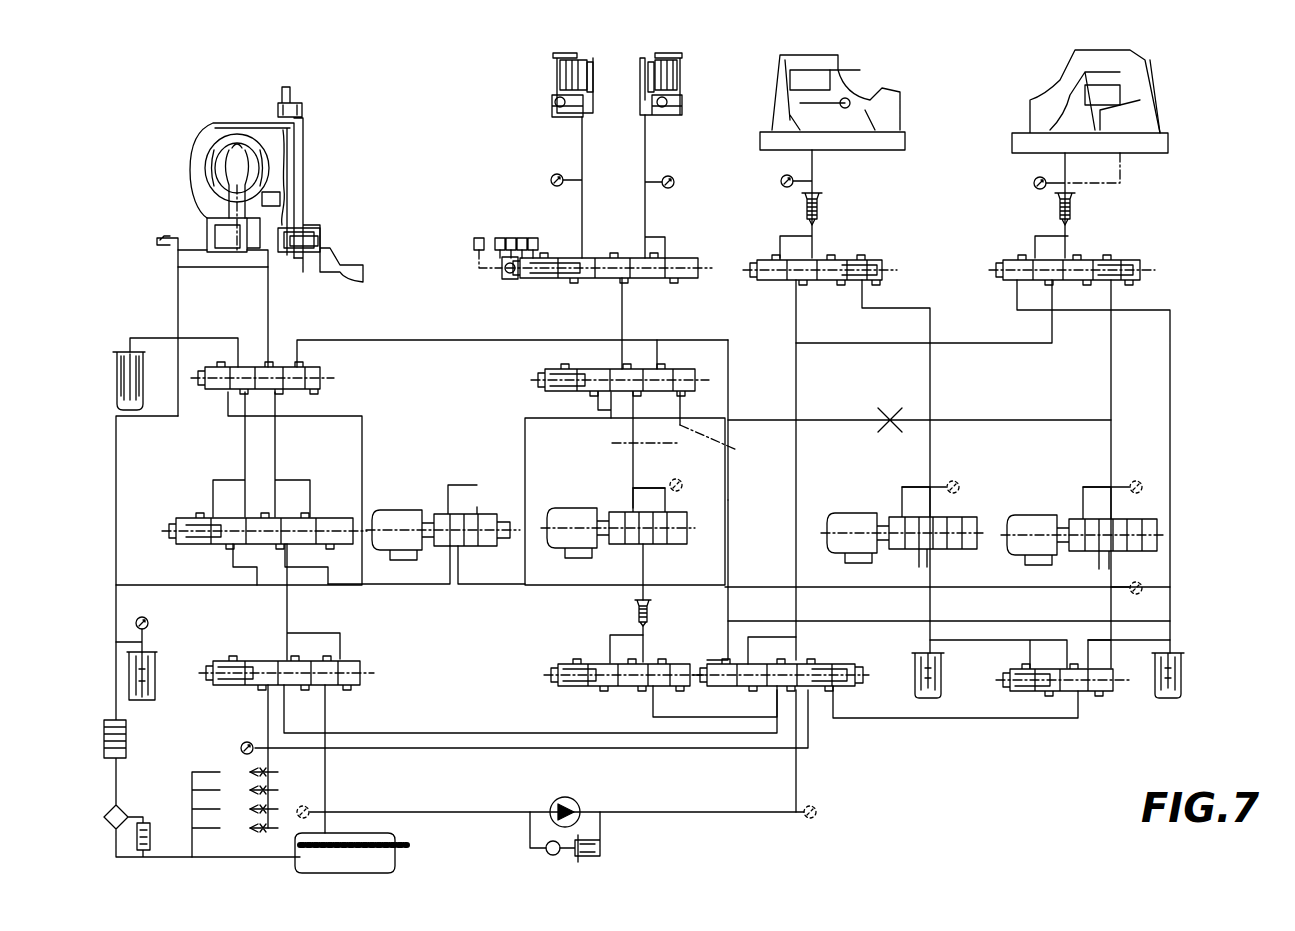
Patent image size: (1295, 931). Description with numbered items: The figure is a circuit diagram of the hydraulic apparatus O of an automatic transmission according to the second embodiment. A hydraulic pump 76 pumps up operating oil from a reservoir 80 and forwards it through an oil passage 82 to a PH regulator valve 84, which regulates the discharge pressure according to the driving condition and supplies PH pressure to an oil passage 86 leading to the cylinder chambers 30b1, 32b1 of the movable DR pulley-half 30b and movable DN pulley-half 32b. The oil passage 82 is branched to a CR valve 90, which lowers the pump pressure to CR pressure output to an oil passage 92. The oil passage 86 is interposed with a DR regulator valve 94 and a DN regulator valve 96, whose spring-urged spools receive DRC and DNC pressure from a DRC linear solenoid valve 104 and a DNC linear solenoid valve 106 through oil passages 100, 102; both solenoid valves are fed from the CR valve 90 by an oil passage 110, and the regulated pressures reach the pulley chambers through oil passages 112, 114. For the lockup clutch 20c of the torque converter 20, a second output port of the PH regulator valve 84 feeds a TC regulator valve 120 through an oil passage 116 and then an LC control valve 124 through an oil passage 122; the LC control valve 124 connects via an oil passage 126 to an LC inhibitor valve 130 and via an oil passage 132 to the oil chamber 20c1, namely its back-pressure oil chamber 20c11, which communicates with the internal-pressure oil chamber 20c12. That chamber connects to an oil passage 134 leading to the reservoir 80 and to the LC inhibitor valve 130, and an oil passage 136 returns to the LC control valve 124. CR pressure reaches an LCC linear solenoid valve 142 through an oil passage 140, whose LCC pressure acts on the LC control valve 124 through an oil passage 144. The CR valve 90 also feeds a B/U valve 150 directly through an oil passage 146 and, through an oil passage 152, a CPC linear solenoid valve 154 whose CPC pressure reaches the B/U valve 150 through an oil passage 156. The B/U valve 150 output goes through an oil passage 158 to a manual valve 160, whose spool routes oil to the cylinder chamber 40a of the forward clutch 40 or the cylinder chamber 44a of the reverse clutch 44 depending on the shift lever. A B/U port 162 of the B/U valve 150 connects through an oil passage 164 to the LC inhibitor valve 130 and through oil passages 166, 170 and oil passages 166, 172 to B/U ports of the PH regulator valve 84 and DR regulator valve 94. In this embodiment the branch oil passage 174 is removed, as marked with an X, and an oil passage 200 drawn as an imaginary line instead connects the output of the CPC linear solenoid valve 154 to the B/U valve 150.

The torque converter 20 is at (166, 128).
The lockup clutch 20c is at (300, 122).
The oil chamber 20c1 is at (412, 166).
The back-pressure oil chamber 20c11 is at (278, 203).
The internal-pressure oil chamber 20c12 is at (298, 236).
The forward clutch 40 is at (682, 73).
The cylinder chamber 40a is at (652, 58).
The reverse clutch 44 is at (553, 78).
The cylinder chamber 44a is at (592, 72).
The movable DN pulley-half 32b is at (882, 103).
The cylinder chamber 32b1 is at (822, 85).
The movable DR pulley-half 30b is at (1053, 112).
The cylinder chamber 30b1 is at (1103, 70).
The hydraulic apparatus O is at (1197, 107).
The hydraulic pump 76 is at (570, 797).
The reservoir 80 is at (370, 826).
The oil passage 82 is at (799, 787).
The PH regulator valve 84 is at (815, 664).
The oil passage 86 is at (797, 451).
The CR valve 90 is at (565, 663).
The oil passage 92 is at (638, 620).
The DR regulator valve 94 is at (1077, 257).
The DN regulator valve 96 is at (832, 257).
The oil passage 100 is at (1113, 358).
The oil passage 102 is at (933, 383).
The DRC linear solenoid valve 104 is at (1013, 515).
The DNC linear solenoid valve 106 is at (838, 510).
The oil passage 110 is at (822, 593).
The oil passage 112 is at (1058, 232).
The oil passage 114 is at (805, 227).
The oil passage 116 is at (420, 733).
The TC regulator valve 120 is at (243, 661).
The oil passage 122 is at (289, 612).
The LC control valve 124 is at (195, 518).
The oil passage 126 is at (276, 446).
The LC inhibitor valve 130 is at (318, 378).
The oil passage 132 is at (270, 303).
The oil passage 134 is at (180, 304).
The oil passage 136 is at (245, 445).
The oil passage 140 is at (470, 594).
The LCC linear solenoid valve 142 is at (392, 506).
The oil passage 144 is at (393, 594).
The oil passage 146 is at (527, 447).
The B/U valve 150 is at (548, 366).
The oil passage 152 is at (648, 572).
The CPC linear solenoid valve 154 is at (556, 508).
The oil passage 156 is at (635, 457).
The oil passage 158 is at (625, 325).
The manual valve 160 is at (588, 258).
The B/U port 162 is at (660, 353).
The oil passage 164 is at (395, 338).
The oil passage 166 is at (730, 385).
The oil passage 170 is at (716, 636).
The oil passage 172 is at (960, 621).
The branch oil passage 174 is at (815, 420).
The oil passage 200 is at (728, 444).